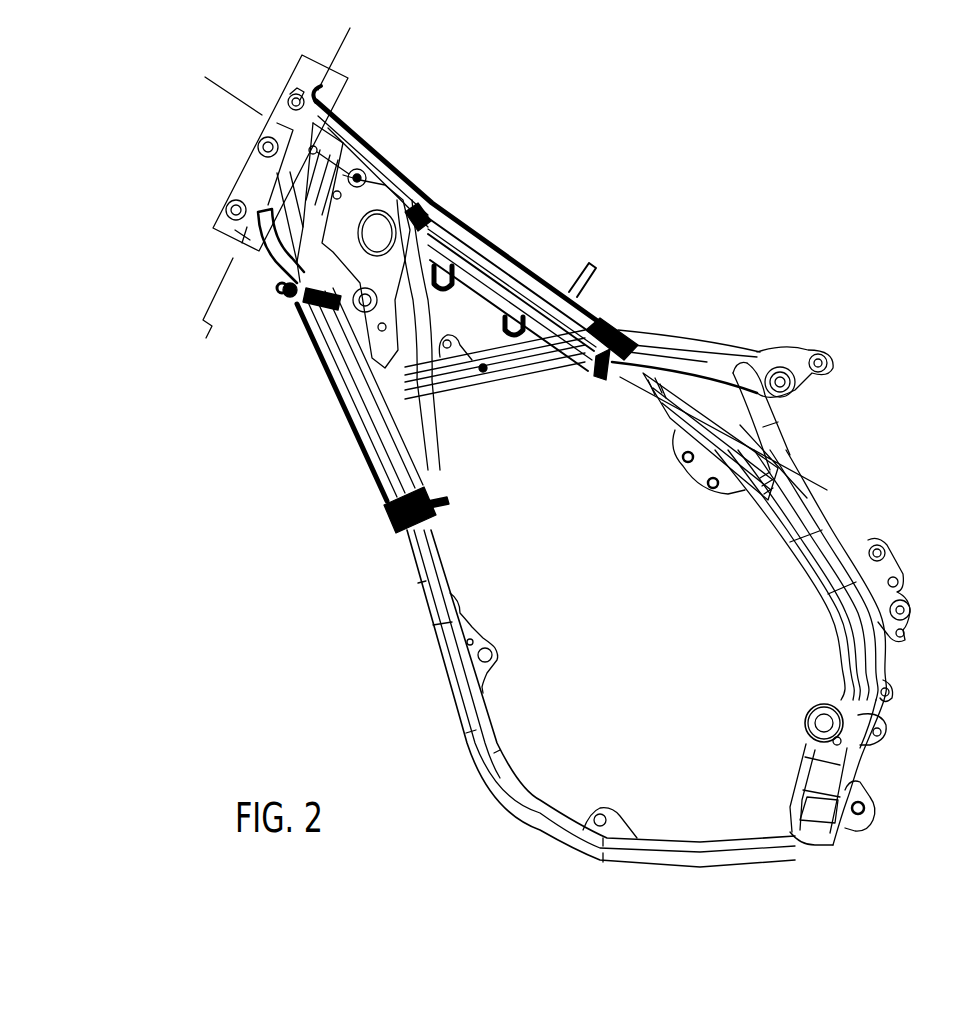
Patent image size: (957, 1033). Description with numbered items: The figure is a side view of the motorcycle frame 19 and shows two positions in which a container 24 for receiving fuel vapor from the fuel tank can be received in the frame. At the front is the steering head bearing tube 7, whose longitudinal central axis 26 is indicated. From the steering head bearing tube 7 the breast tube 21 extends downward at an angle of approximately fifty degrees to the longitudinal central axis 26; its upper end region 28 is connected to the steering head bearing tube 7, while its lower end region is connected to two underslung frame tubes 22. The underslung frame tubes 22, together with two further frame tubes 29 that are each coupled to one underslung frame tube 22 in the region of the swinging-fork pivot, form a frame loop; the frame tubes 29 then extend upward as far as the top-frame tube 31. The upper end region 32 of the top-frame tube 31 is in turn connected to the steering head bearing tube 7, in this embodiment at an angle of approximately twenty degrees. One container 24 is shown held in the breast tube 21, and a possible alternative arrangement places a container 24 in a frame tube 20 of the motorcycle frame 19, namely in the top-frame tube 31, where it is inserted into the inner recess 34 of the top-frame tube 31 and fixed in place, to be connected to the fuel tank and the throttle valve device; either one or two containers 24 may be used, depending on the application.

The steering head bearing tube 7 is at (250, 157).
The motorcycle frame 19 is at (653, 628).
The frame tube 20 is at (280, 278).
The breast tube 21 is at (300, 300).
The underslung frame tubes 22 is at (413, 560).
The container 24 is at (507, 253).
The longitudinal central axis 26 is at (269, 201).
The upper end region 28 is at (230, 190).
The frame tubes 29 is at (878, 665).
The top-frame tube 31 is at (600, 314).
The upper end region 32 is at (352, 113).
The inner recess 34 is at (487, 227).